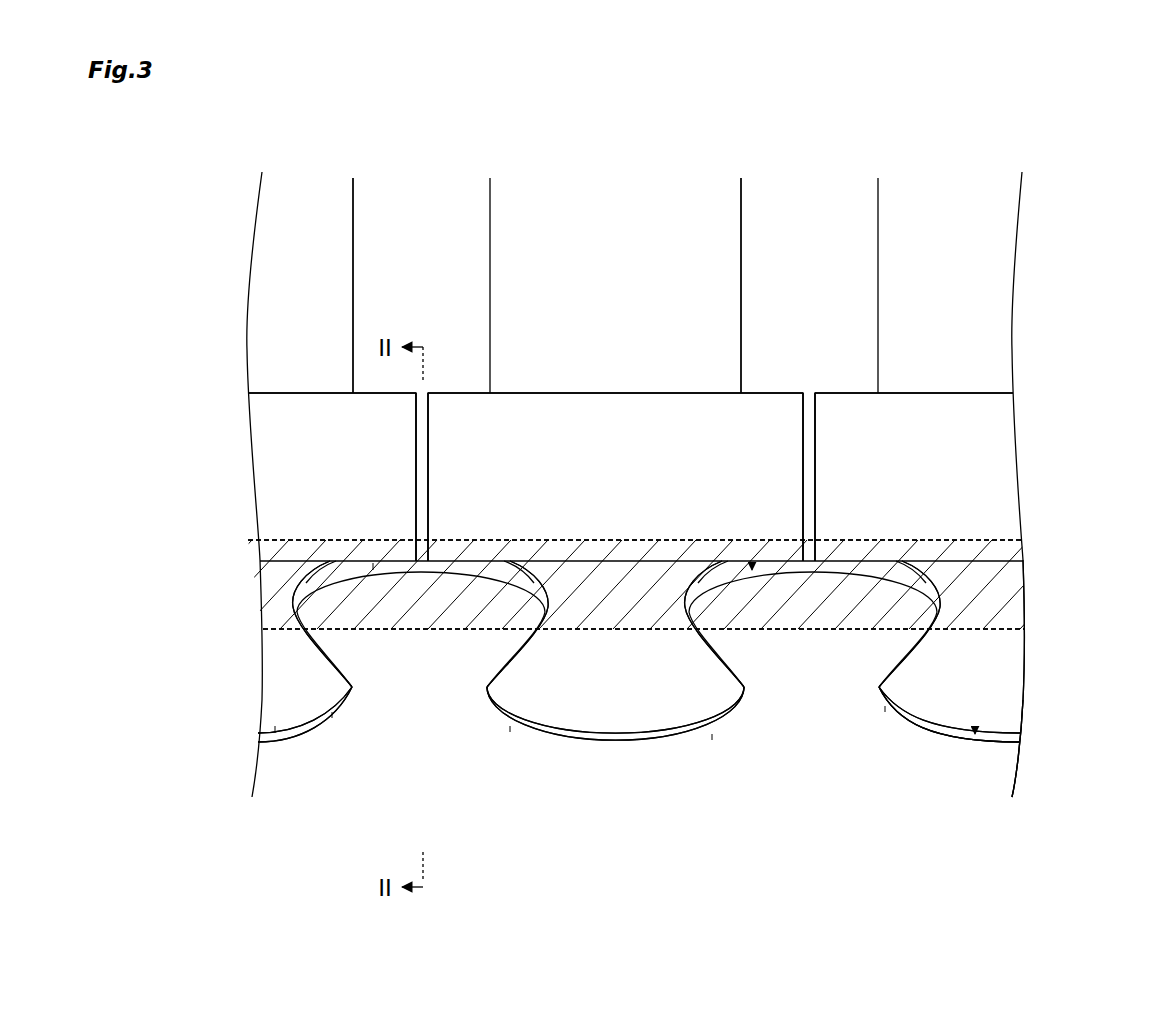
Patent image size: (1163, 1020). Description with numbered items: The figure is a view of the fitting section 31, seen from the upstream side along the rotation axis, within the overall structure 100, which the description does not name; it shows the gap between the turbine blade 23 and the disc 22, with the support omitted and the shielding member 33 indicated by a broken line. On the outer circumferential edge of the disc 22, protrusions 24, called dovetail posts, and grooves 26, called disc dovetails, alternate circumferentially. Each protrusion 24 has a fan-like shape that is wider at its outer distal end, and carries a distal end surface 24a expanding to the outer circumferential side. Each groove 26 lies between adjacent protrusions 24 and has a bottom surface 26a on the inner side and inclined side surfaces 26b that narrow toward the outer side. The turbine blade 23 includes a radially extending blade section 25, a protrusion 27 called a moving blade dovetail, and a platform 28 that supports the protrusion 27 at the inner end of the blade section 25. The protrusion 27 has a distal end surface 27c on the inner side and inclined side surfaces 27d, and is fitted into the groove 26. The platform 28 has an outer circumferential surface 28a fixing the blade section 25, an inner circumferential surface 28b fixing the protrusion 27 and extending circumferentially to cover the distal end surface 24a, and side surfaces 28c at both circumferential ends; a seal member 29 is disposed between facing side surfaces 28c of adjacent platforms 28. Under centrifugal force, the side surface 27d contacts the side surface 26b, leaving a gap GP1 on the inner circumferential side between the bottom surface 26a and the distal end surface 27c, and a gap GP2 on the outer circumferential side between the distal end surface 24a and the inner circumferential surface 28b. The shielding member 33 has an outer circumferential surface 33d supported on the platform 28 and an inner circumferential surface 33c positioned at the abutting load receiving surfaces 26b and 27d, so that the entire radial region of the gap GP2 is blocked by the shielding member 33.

The semiconductor device 100 is at (178, 265).
The disc 22 is at (985, 772).
The turbine blade 23 is at (365, 227).
The protrusion 24 is at (425, 688).
The distal end surface 24a is at (470, 562).
The blade section 25 is at (353, 312).
The groove 26 is at (290, 715).
The bottom surface 26a is at (590, 728).
The side surface 26b is at (505, 648).
The protrusion 27 is at (285, 665).
The distal end surface 27c is at (685, 735).
The side surface 27d is at (285, 648).
The platform 28 is at (275, 430).
The outer circumferential surface 28a is at (300, 390).
The inner circumferential surface 28b is at (290, 582).
The side surface 28c is at (415, 457).
The seal member 29 is at (428, 492).
The fitting section 31 is at (1033, 705).
The shielding member 33 is at (300, 535).
The inner circumferential surface 33c is at (812, 650).
The outer circumferential surface 33d is at (665, 538).
The gap on the inner circumferential side GP1 is at (335, 722).
The gap on the outer circumferential side GP2 is at (373, 565).